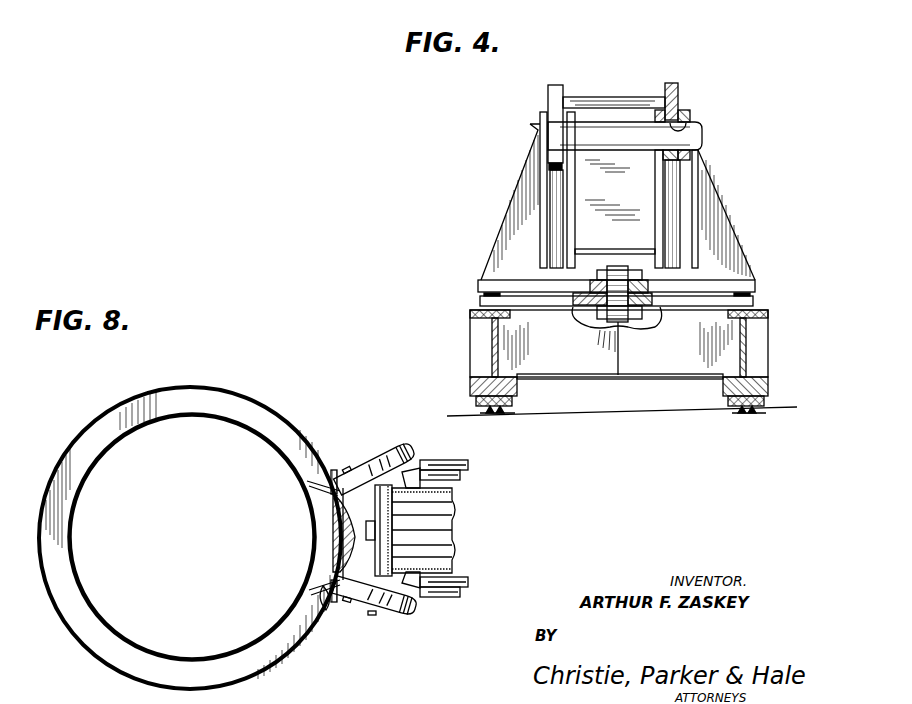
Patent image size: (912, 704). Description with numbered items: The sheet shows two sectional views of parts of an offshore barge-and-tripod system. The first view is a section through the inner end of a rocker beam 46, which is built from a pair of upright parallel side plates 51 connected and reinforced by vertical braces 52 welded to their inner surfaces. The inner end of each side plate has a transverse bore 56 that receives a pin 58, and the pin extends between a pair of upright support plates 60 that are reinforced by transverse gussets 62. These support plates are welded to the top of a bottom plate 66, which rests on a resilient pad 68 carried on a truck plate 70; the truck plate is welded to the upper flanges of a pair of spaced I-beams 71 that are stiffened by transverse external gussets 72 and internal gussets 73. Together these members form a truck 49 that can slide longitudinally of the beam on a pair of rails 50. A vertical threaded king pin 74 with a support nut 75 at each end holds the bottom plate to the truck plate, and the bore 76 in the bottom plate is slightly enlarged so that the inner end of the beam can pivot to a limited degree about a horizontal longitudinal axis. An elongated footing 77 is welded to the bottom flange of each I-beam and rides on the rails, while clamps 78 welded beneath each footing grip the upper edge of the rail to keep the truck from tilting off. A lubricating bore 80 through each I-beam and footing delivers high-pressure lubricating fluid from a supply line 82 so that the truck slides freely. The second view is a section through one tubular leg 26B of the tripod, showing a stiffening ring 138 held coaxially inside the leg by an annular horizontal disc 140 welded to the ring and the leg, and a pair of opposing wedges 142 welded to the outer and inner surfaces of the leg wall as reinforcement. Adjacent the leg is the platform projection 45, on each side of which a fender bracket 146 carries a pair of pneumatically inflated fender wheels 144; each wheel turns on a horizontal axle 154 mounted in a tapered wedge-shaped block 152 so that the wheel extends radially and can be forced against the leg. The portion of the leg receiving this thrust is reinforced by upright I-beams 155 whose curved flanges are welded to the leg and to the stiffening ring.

In FIG. 4, the rocker beam 46 is at (606, 90).
In FIG. 4, the side plates 51 is at (558, 82).
In FIG. 4, the vertical braces 52 is at (635, 97).
In FIG. 4, the transverse bore 56 is at (692, 120).
In FIG. 4, the pin 58 is at (700, 136).
In FIG. 4, the support plates 60 is at (565, 148).
In FIG. 4, the transverse gussets 62 is at (530, 183).
In FIG. 4, the bottom plate 66 is at (530, 256).
In FIG. 4, the resilient pad 68 is at (657, 278).
In FIG. 4, the truck plate 70 is at (745, 296).
In FIG. 4, the external gussets 72 is at (480, 330).
In FIG. 4, the I-beams 71 is at (493, 341).
In FIG. 4, the internal gussets 73 is at (755, 316).
In FIG. 4, the footing 77 is at (517, 381).
In FIG. 4, the rails 50 is at (475, 387).
In FIG. 4, the clamps 78 is at (480, 402).
In FIG. 4, the lubricating bore 80 is at (518, 398).
In FIG. 4, the truck 49 is at (475, 287).
In FIG. 4, the support nut 75 is at (623, 270).
In FIG. 4, the bore 76 is at (610, 266).
In FIG. 4, the king pin 74 is at (613, 320).
In FIG. 4, the supply line 82 is at (498, 372).
In FIG. 8, the annular horizontal disc 140 is at (112, 425).
In FIG. 8, the tubular leg 26B is at (108, 665).
In FIG. 8, the stiffening ring 138 is at (120, 436).
In FIG. 8, the wedges 142 is at (336, 520).
In FIG. 8, the fender wheels 144 is at (393, 452).
In FIG. 8, the wedge-shaped block 152 is at (412, 466).
In FIG. 8, the projection 45 is at (432, 498).
In FIG. 8, the fender bracket 146 is at (462, 594).
In FIG. 8, the axle 154 is at (372, 616).
In FIG. 8, the I-beams 155 is at (326, 612).